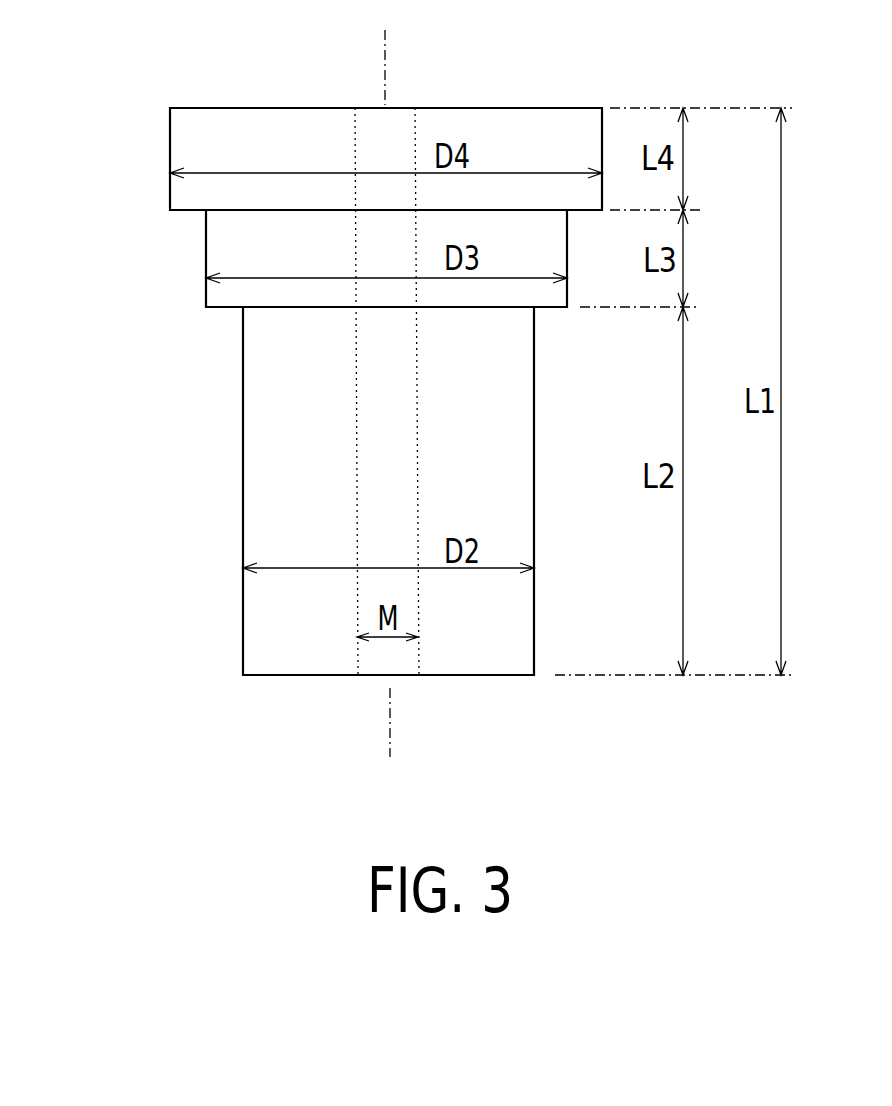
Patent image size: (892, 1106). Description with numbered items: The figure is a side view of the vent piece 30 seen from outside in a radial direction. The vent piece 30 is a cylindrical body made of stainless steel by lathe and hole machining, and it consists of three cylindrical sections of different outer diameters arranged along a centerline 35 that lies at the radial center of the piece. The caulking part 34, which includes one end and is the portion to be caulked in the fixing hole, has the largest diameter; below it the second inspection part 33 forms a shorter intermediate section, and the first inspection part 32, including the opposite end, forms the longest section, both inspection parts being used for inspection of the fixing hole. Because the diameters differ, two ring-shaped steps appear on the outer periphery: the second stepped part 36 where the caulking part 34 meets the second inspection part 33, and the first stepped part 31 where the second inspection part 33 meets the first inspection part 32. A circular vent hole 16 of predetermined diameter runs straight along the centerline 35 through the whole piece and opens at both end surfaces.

The vent piece 30 is at (341, 343).
The caulking part 34 is at (190, 141).
The second inspection part 33 is at (220, 247).
The first inspection part 32 is at (262, 536).
The second stepped part 36 is at (178, 212).
The first stepped part 31 is at (223, 310).
The vent hole 16 is at (397, 128).
The centerline 35 is at (386, 378).